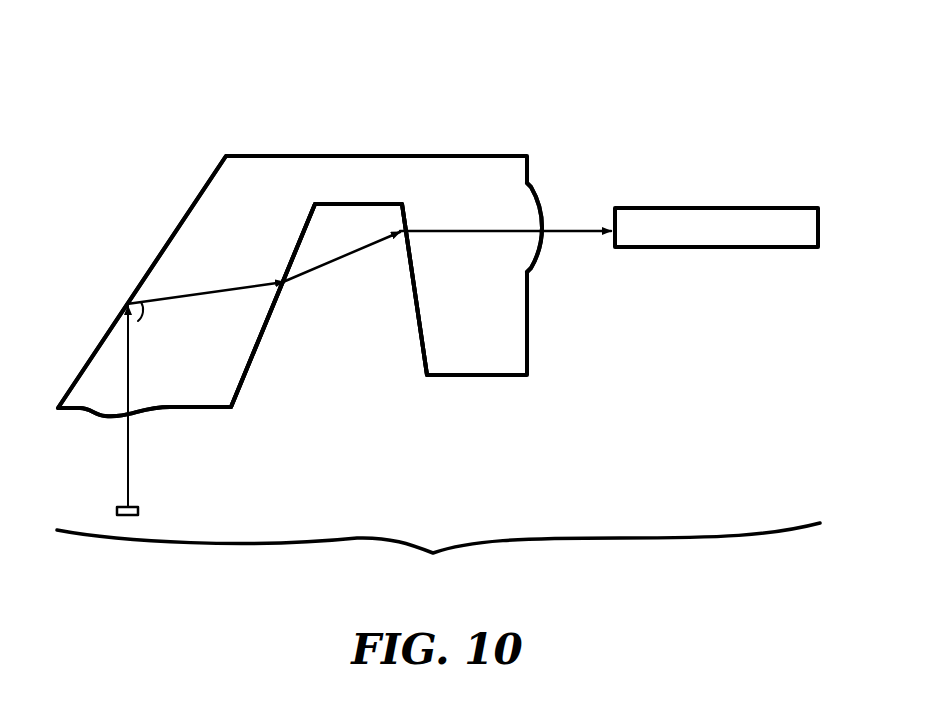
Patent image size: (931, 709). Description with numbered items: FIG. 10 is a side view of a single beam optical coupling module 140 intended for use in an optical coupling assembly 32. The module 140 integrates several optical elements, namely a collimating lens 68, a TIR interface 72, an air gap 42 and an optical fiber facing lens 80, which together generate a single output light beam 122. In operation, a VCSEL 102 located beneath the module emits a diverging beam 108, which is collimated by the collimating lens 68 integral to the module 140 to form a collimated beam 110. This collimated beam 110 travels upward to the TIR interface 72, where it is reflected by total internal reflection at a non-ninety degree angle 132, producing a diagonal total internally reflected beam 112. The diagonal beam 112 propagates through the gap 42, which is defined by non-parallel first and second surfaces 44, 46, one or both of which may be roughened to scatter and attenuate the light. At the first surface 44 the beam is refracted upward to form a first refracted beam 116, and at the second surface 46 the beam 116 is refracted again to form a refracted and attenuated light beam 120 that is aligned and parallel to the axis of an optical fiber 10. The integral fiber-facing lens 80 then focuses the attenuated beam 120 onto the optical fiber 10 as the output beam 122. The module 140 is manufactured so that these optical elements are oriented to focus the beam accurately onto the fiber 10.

The optical fiber 10 is at (713, 213).
The optical coupling assembly 32 is at (438, 555).
The air gap 42 is at (343, 392).
The first surface 44 is at (260, 345).
The second surface 46 is at (418, 325).
The collimating lens 68 is at (105, 418).
The TIR interface 72 is at (181, 218).
The optical fiber facing lens 80 is at (537, 263).
The VCSEL 102 is at (139, 512).
The diverging beam 108 is at (128, 461).
The collimated beam 110 is at (128, 383).
The diagonal total internally reflected beam 112 is at (198, 293).
The first refracted beam 116 is at (338, 260).
The refracted and attenuated light beam 120 is at (450, 227).
The single output light beam 122 is at (565, 225).
The non-90 degree angle 132 is at (138, 321).
The optical coupling module 140 is at (489, 125).